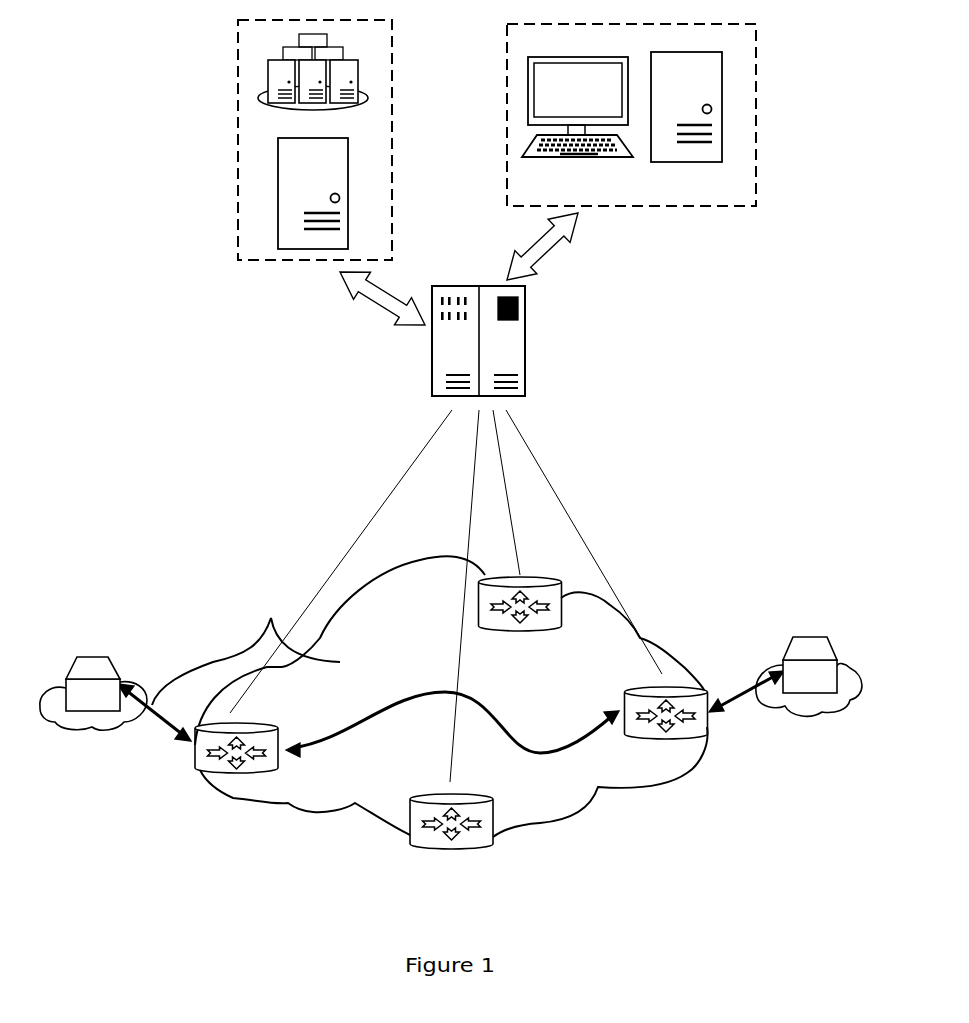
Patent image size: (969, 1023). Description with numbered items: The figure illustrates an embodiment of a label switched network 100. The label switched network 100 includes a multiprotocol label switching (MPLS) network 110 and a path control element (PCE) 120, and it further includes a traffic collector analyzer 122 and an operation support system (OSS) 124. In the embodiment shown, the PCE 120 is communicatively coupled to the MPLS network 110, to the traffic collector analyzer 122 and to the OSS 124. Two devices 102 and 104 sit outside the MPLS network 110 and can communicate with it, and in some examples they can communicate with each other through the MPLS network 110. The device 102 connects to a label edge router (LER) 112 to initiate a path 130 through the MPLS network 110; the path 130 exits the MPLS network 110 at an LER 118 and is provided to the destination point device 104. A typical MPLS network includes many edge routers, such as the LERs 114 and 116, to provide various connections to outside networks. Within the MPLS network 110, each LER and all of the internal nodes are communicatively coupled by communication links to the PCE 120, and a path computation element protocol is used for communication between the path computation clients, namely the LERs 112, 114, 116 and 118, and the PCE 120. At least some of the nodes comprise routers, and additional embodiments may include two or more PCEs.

The label switched network 100 is at (668, 379).
The device 102 is at (115, 663).
The destination point device 104 is at (807, 637).
The multiprotocol label switching (MPLS) network 110 is at (653, 645).
The label edge router (LER) 112 is at (280, 730).
The label edge router (LER) 114 is at (495, 800).
The label edge router (LER) 116 is at (562, 618).
The label edge router (LER) 118 is at (685, 684).
The path control element (PCE) 120 is at (526, 353).
The traffic collector analyzer 122 is at (388, 156).
The operation support system (OSS) 124 is at (756, 123).
The path 130 is at (271, 618).